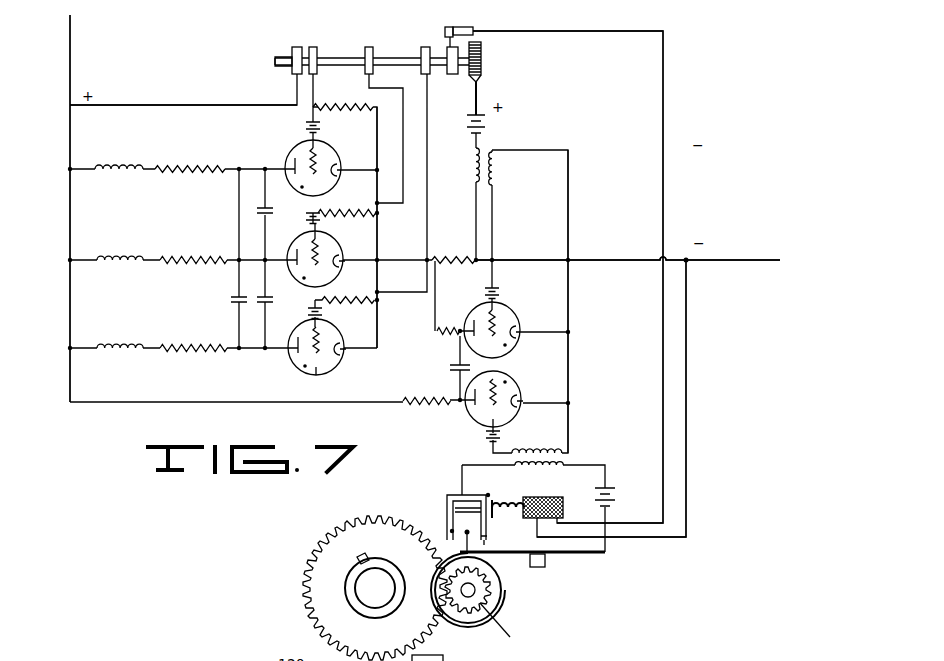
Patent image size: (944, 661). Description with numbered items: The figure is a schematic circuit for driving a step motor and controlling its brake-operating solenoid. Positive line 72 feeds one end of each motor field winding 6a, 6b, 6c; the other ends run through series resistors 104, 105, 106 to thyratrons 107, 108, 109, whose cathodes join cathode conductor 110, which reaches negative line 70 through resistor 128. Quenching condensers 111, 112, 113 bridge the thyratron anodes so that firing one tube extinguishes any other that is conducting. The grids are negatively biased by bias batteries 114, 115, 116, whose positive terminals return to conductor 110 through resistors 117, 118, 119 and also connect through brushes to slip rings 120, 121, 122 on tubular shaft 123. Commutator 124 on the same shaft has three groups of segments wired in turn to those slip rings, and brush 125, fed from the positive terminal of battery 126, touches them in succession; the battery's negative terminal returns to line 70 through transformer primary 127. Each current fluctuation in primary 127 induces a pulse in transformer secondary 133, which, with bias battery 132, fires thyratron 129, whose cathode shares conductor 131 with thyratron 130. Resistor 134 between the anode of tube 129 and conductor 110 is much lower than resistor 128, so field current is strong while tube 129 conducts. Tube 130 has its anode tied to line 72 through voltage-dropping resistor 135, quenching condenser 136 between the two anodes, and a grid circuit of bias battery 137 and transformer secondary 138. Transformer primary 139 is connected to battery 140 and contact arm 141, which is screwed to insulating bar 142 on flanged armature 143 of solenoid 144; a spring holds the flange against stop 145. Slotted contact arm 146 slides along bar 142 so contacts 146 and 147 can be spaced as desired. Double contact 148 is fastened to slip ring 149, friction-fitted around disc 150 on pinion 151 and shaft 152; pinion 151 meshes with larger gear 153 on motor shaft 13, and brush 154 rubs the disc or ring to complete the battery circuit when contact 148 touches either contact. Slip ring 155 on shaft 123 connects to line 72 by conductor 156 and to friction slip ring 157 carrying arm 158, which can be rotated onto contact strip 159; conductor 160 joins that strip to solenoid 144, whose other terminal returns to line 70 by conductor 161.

The motor field winding 6a is at (130, 165).
The motor field winding 6b is at (128, 256).
The motor field winding 6c is at (130, 344).
The motor shaft 13 is at (360, 586).
The negative line 70 is at (602, 245).
The positive line 72 is at (69, 130).
The resistor 104 is at (190, 165).
The resistor 105 is at (188, 256).
The resistor 106 is at (190, 345).
The thyratron 107 is at (292, 148).
The thyratron 108 is at (291, 247).
The thyratron 109 is at (300, 364).
The cathode conductor 110 is at (378, 242).
The quenching condenser 111 is at (259, 208).
The quenching condenser 112 is at (273, 300).
The quenching condenser 113 is at (229, 298).
The bias battery 114 is at (322, 128).
The bias battery 115 is at (309, 216).
The bias battery 116 is at (309, 310).
The resistor 117 is at (347, 104).
The resistor 118 is at (351, 218).
The resistor 119 is at (354, 304).
The slip ring 120 is at (315, 47).
The slip ring 121 is at (370, 47).
The slip ring 122 is at (425, 47).
The shaft 123 is at (285, 55).
The commutator 124 is at (481, 58).
The brush 125 is at (478, 84).
The battery 126 is at (488, 126).
The transformer primary 127 is at (472, 178).
The resistor 128 is at (462, 244).
The thyratron 129 is at (472, 304).
The thyratron 130 is at (478, 418).
The conductor 131 is at (570, 357).
The bias battery 132 is at (500, 294).
The transformer secondary 133 is at (497, 168).
The resistor 134 is at (453, 336).
The voltage-dropping resistor 135 is at (430, 402).
The quenching condenser 136 is at (450, 368).
The bias battery 137 is at (488, 438).
The transformer secondary 138 is at (537, 449).
The transformer primary 139 is at (565, 465).
The battery 140 is at (617, 496).
The contact arm 141 is at (447, 497).
The insulating bar 142 is at (455, 509).
The flanged armature 143 is at (520, 490).
The solenoid 144 is at (546, 496).
The stop 145 is at (493, 517).
The contact arm 146 is at (492, 484).
The contact 147 is at (490, 537).
The double contact 148 is at (437, 552).
The slip ring 149 is at (507, 606).
The disc 150 is at (497, 588).
The pinion 151 is at (509, 630).
The shaft 152 is at (468, 596).
The larger gear 153 is at (312, 624).
The brush 154 is at (530, 560).
The slip ring 155 is at (296, 46).
The conductor 156 is at (197, 104).
The friction slip ring 157 is at (454, 75).
The arm 158 is at (456, 25).
The contact strip 159 is at (474, 29).
The conductor 160 is at (664, 87).
The conductor 161 is at (690, 504).